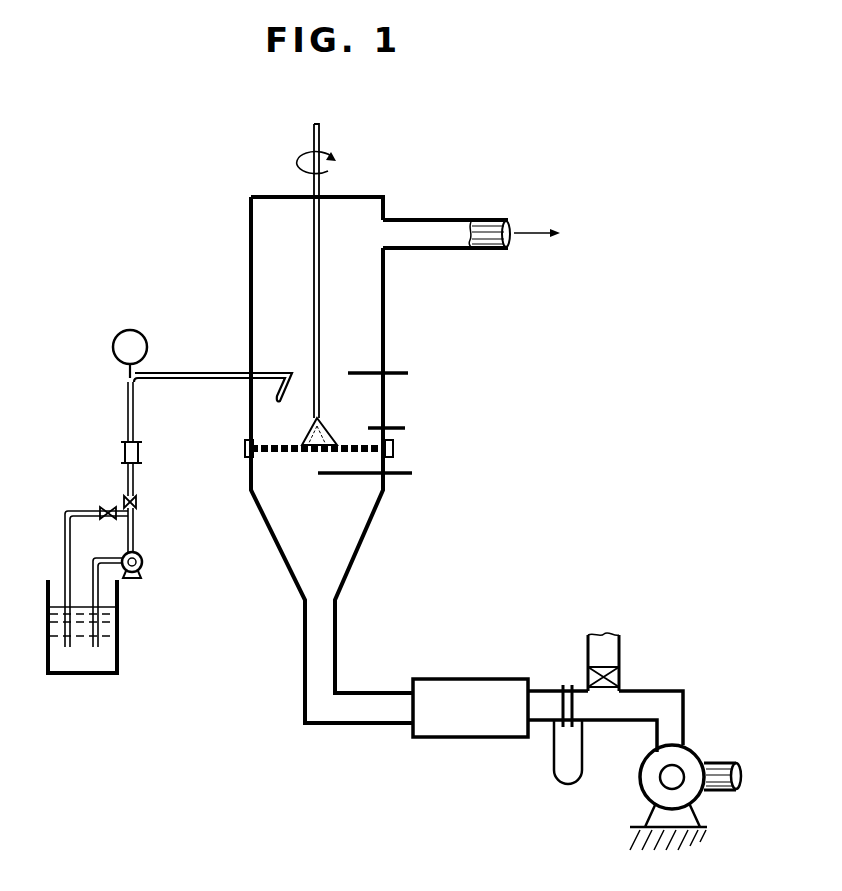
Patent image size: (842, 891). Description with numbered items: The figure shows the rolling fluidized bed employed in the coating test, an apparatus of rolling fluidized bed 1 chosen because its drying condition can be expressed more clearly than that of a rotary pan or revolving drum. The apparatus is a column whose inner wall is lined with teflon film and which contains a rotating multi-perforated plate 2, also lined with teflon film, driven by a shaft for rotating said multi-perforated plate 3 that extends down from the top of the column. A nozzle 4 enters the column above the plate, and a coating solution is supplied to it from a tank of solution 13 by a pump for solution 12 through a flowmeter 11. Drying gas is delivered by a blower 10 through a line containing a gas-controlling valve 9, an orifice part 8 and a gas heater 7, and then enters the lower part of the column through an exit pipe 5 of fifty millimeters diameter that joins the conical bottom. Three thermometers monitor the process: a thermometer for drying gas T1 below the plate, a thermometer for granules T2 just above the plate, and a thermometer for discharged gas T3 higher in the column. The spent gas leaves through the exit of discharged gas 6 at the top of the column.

The apparatus of rolling fluidized bed 1 is at (250, 248).
The rotating multi-perforated plate 2 is at (293, 453).
The shaft for rotating said multi-perforated plate 3 is at (312, 186).
The nozzle 4 is at (276, 400).
The exit pipe 5 is at (337, 642).
The exit of discharged gas 6 is at (437, 222).
The gas heater 7 is at (478, 680).
The orifice part 8 is at (554, 767).
The gas-controlling valve 9 is at (622, 680).
The blower 10 is at (652, 792).
The flowmeter 11 is at (122, 455).
The pump for solution 12 is at (143, 562).
The tank of solution 13 is at (105, 675).
The thermometer for drying gas T1 is at (404, 470).
The thermometer for granules T2 is at (398, 420).
The thermometer for discharged gas T3 is at (399, 364).